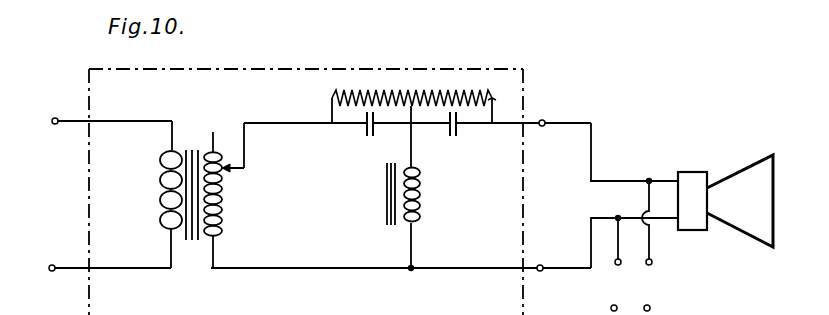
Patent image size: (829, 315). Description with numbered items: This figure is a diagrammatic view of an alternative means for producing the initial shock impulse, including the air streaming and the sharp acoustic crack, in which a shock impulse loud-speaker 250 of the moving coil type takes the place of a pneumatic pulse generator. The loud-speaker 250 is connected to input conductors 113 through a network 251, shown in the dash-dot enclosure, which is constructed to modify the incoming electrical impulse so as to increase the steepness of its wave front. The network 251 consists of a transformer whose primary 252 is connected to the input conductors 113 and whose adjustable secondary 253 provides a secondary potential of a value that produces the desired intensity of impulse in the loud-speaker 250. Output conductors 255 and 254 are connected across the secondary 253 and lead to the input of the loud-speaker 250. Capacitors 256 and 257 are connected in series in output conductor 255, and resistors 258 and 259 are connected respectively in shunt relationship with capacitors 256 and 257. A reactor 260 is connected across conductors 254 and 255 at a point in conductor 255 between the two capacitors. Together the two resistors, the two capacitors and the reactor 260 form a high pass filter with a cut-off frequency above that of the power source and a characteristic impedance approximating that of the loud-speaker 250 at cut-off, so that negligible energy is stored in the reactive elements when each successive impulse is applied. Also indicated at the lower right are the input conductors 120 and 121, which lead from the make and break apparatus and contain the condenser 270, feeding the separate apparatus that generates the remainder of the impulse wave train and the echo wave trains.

The input conductors 113 is at (70, 121).
The input conductor 120 is at (629, 212).
The input conductor 121 is at (651, 309).
The shock impulse loud-speaker 250 is at (705, 171).
The network 251 is at (439, 67).
The primary 252 is at (161, 207).
The adjustable secondary 253 is at (222, 205).
The output conductor 254 is at (343, 270).
The output conductor 255 is at (280, 112).
The capacitor 256 is at (368, 136).
The capacitor 257 is at (457, 133).
The resistor 258 is at (378, 92).
The resistor 259 is at (492, 98).
The reactor 260 is at (421, 190).
The condenser 270 is at (587, 307).